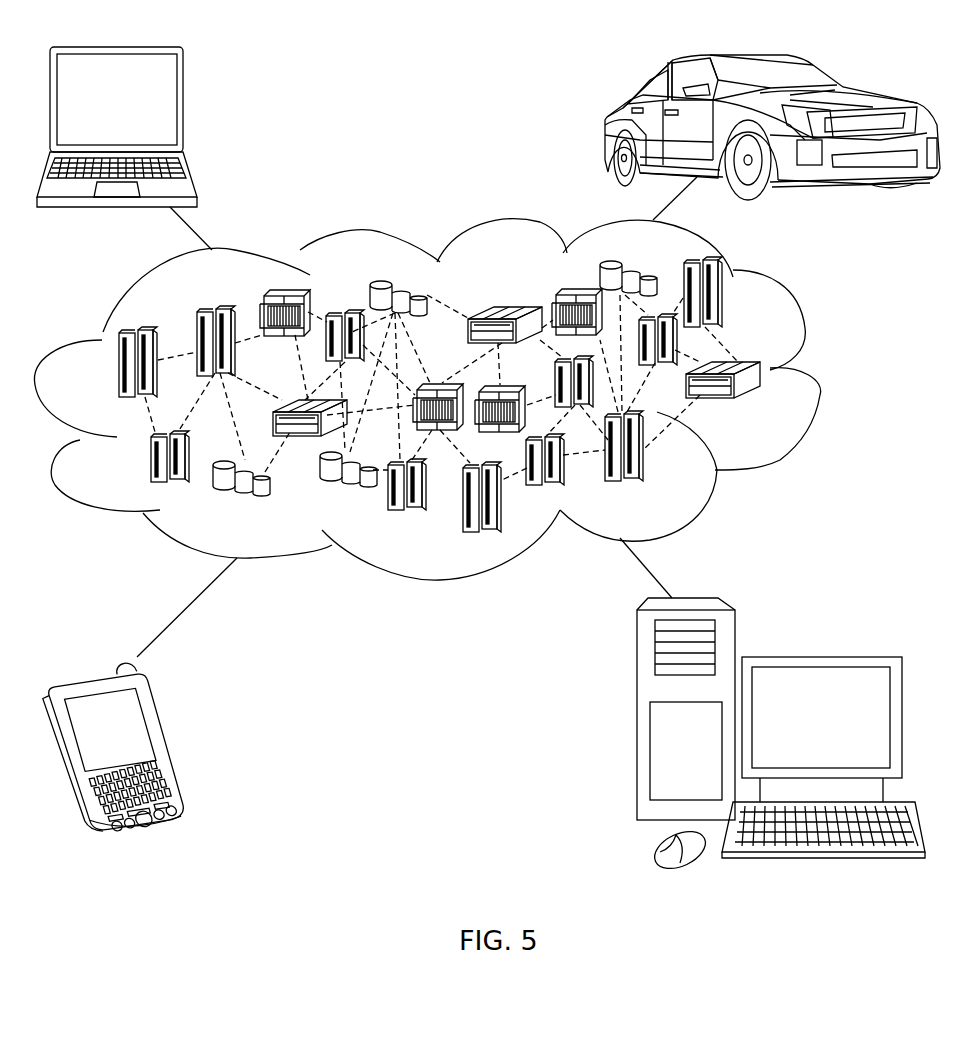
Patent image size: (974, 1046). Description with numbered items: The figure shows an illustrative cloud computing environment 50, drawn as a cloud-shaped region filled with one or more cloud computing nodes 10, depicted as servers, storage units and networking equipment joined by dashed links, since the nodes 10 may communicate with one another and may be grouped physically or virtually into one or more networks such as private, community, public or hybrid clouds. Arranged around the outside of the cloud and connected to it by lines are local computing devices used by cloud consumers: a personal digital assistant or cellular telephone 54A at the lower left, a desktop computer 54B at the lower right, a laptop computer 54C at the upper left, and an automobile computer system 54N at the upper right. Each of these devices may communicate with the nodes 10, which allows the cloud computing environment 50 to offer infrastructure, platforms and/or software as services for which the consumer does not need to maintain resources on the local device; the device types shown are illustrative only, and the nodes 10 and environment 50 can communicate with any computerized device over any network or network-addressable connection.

The cloud computing node 10 is at (768, 408).
The cloud computing environment 50 is at (818, 376).
The personal digital assistant (PDA) or cellular telephone 54A is at (176, 741).
The desktop computer 54B is at (818, 657).
The laptop computer 54C is at (185, 106).
The automobile computer system 54N is at (606, 124).